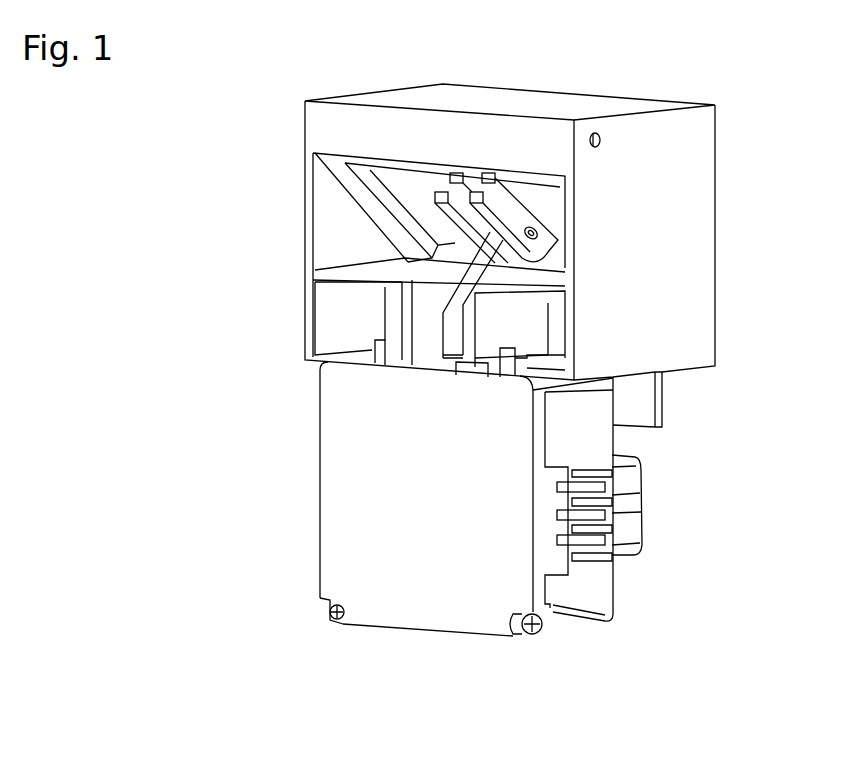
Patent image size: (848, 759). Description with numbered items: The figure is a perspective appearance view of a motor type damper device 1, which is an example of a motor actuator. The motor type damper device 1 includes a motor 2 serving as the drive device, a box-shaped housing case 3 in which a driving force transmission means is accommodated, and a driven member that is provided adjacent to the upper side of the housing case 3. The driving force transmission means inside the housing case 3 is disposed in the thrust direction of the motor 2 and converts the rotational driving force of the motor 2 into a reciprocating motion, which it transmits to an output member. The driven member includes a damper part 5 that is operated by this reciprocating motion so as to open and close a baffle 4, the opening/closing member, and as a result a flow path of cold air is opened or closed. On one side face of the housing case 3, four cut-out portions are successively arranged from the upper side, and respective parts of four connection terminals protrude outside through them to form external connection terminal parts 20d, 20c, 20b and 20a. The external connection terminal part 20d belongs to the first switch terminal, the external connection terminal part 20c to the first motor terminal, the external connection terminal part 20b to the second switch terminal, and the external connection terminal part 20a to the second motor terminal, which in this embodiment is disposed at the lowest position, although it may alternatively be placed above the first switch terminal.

The motor type damper device 1 is at (275, 326).
The motor 2 is at (630, 457).
The housing case 3 is at (400, 488).
The baffle 4 is at (387, 188).
The damper part 5 is at (625, 262).
The external connection terminal part 20a is at (613, 560).
The external connection terminal part 20b is at (610, 528).
The external connection terminal part 20c is at (610, 502).
The external connection terminal part 20d is at (612, 470).